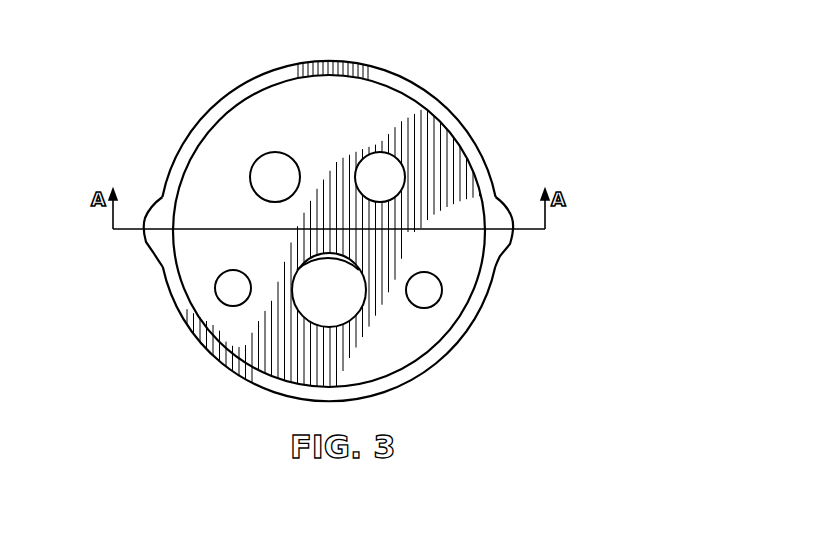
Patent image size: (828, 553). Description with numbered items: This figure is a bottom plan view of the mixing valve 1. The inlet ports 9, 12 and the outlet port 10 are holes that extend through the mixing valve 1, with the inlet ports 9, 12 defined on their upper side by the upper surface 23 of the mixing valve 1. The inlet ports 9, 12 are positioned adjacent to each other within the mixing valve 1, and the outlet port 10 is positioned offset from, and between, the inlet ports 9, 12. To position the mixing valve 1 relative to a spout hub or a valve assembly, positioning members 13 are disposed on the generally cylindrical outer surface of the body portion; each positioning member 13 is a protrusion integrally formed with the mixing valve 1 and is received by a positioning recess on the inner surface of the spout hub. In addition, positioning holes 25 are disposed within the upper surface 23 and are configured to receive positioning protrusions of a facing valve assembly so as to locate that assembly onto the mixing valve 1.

The mixing valve 1 is at (133, 319).
The inlet port 9 is at (275, 166).
The outlet port 10 is at (326, 302).
The inlet port 12 is at (375, 167).
The positioning member 13 is at (148, 235).
The upper surface 23 is at (313, 101).
The positioning hole 25 is at (230, 296).